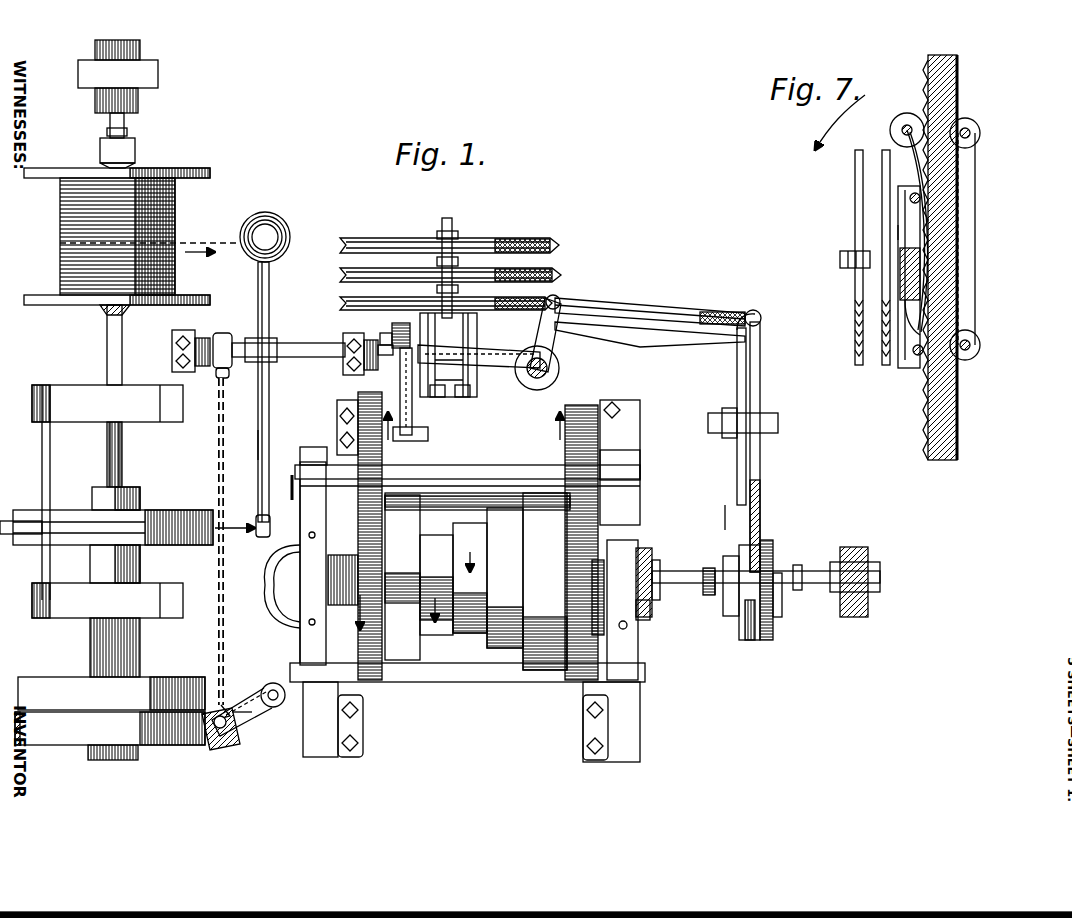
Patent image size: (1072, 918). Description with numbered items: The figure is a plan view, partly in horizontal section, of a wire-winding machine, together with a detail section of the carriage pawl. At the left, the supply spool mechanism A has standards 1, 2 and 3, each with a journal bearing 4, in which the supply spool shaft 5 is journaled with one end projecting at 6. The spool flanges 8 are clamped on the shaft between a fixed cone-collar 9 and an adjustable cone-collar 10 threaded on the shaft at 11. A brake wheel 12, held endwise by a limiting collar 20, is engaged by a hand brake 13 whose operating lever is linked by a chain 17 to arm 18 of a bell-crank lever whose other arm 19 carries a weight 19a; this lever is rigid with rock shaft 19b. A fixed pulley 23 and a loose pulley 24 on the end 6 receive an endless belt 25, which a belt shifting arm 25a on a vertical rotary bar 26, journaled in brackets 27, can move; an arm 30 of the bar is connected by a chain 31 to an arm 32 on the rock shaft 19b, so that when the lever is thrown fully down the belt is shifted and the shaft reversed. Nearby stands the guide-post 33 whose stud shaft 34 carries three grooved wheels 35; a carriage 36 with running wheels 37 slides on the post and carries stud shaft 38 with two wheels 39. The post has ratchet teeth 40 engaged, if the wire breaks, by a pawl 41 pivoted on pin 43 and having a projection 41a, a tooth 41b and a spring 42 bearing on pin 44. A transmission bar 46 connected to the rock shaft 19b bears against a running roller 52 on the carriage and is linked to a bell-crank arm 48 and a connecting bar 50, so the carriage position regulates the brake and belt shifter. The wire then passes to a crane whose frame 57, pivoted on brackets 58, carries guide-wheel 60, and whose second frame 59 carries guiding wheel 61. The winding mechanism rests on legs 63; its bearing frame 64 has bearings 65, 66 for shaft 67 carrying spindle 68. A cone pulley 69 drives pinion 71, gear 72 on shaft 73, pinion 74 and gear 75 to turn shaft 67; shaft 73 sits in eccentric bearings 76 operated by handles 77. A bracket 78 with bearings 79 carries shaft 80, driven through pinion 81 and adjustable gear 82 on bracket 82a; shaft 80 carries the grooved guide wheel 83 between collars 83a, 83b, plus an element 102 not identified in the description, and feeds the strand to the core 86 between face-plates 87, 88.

In FIG. 1, the standard 1 is at (90, 82).
In FIG. 1, the journal bearing 4 is at (98, 98).
In FIG. 1, the threaded portion of shaft 11 is at (110, 130).
In FIG. 1, the adjustable cone-collar 10 is at (136, 155).
In FIG. 1, the spool flange 8 is at (195, 170).
In FIG. 1, the fixed cone-collar 9 is at (105, 312).
In FIG. 1, the standard 2 is at (107, 492).
In FIG. 1, the supply spool shaft 5 is at (122, 448).
In FIG. 1, the supply spool mechanism A is at (69, 364).
In FIG. 1, the limiting collar 20 is at (95, 495).
In FIG. 1, the brake wheel 12 is at (25, 518).
In FIG. 1, the hand brake 13 is at (175, 512).
In FIG. 1, the standard 3 is at (107, 600).
In FIG. 1, the fixed pulley 23 is at (58, 662).
In FIG. 1, the loose pulley 24 is at (78, 735).
In FIG. 1, the projecting end of shaft 6 is at (115, 760).
In FIG. 1, the weight 19a is at (242, 230).
In FIG. 1, the lever arm 19 is at (258, 286).
In FIG. 1, the lever arm 18 is at (258, 446).
In FIG. 1, the arm 32 is at (236, 330).
In FIG. 1, the rock shaft 19b is at (312, 334).
In FIG. 1, the chain 31 is at (218, 570).
In FIG. 1, the chain 17 is at (252, 522).
In FIG. 1, the arm 30 is at (220, 685).
In FIG. 1, the vertical rotary bar 26 is at (265, 690).
In FIG. 1, the endless belt 25 is at (228, 748).
In FIG. 1, the belt shifting arm 25a is at (255, 714).
In FIG. 1, the brackets 27 is at (290, 690).
In FIG. 1, the legs 63 is at (326, 735).
In FIG. 1, the larger gear 75 is at (467, 687).
In FIG. 1, the bearing frame 64 is at (455, 665).
In FIG. 1, the shaft 73 is at (440, 490).
In FIG. 1, the bearing 65 is at (305, 615).
In FIG. 1, the handles 77 is at (328, 524).
In FIG. 1, the eccentric bearings 76 is at (305, 450).
In FIG. 1, the bearings 79 is at (345, 422).
In FIG. 1, the shaft 67 is at (343, 600).
In FIG. 1, the larger gear 72 is at (382, 522).
In FIG. 1, the pinion 71 is at (425, 600).
In FIG. 1, the small pinion 74 is at (560, 490).
In FIG. 1, the cone pulley 69 is at (505, 640).
In FIG. 1, the pinion 81 is at (560, 578).
In FIG. 1, the adjustable gear 82 is at (552, 445).
In FIG. 1, the movable bracket 82a is at (625, 480).
In FIG. 1, the stud shaft 34 is at (450, 210).
In FIG. 1, the grooved wheels 35 is at (510, 232).
In FIG. 1, the running roller 52 is at (392, 332).
In FIG. 1, the transmission bar 46 is at (400, 386).
In FIG. 1, the connecting bar 50 is at (412, 441).
In FIG. 1, the carriage 36 is at (478, 332).
In FIG. 7, the carriage 36 is at (913, 360).
In FIG. 1, the running wheels 37 is at (443, 403).
In FIG. 7, the running wheels 37 is at (900, 128).
In FIG. 1, the vertical arm of bell-crank lever 48 is at (479, 355).
In FIG. 1, the brackets 58 is at (570, 345).
In FIG. 1, the rectangular frame 57 is at (665, 340).
In FIG. 1, the guide-wheel 60 is at (705, 310).
In FIG. 1, the second frame 59 is at (737, 378).
In FIG. 1, the grooved guiding wheel 61 is at (760, 470).
In FIG. 1, the face-plate 87 is at (732, 530).
In FIG. 1, the shaft 80 is at (660, 572).
In FIG. 1, the spindle 68 is at (706, 596).
In FIG. 1, the collar 83b is at (714, 596).
In FIG. 1, the core 86 is at (728, 618).
In FIG. 1, the grooved guide wheel 83 is at (752, 630).
In FIG. 1, the face-plate 88 is at (772, 545).
In FIG. 1, the collar 83a is at (782, 570).
In FIG. 1, the collar 102 is at (797, 590).
In FIG. 1, the bracket 78 is at (643, 613).
In FIG. 1, the bearing 66 is at (615, 623).
In FIG. 7, the guide-post 33 is at (958, 410).
In FIG. 7, the ratchet teeth 40 is at (923, 430).
In FIG. 7, the grooved wheels 39 is at (856, 205).
In FIG. 7, the projection 41a is at (905, 228).
In FIG. 7, the stud shaft 38 is at (840, 259).
In FIG. 7, the pawl 41 is at (922, 312).
In FIG. 7, the tooth 41b is at (918, 320).
In FIG. 7, the spring 42 is at (922, 220).
In FIG. 7, the pin 43 is at (905, 272).
In FIG. 7, the pin 44 is at (922, 196).